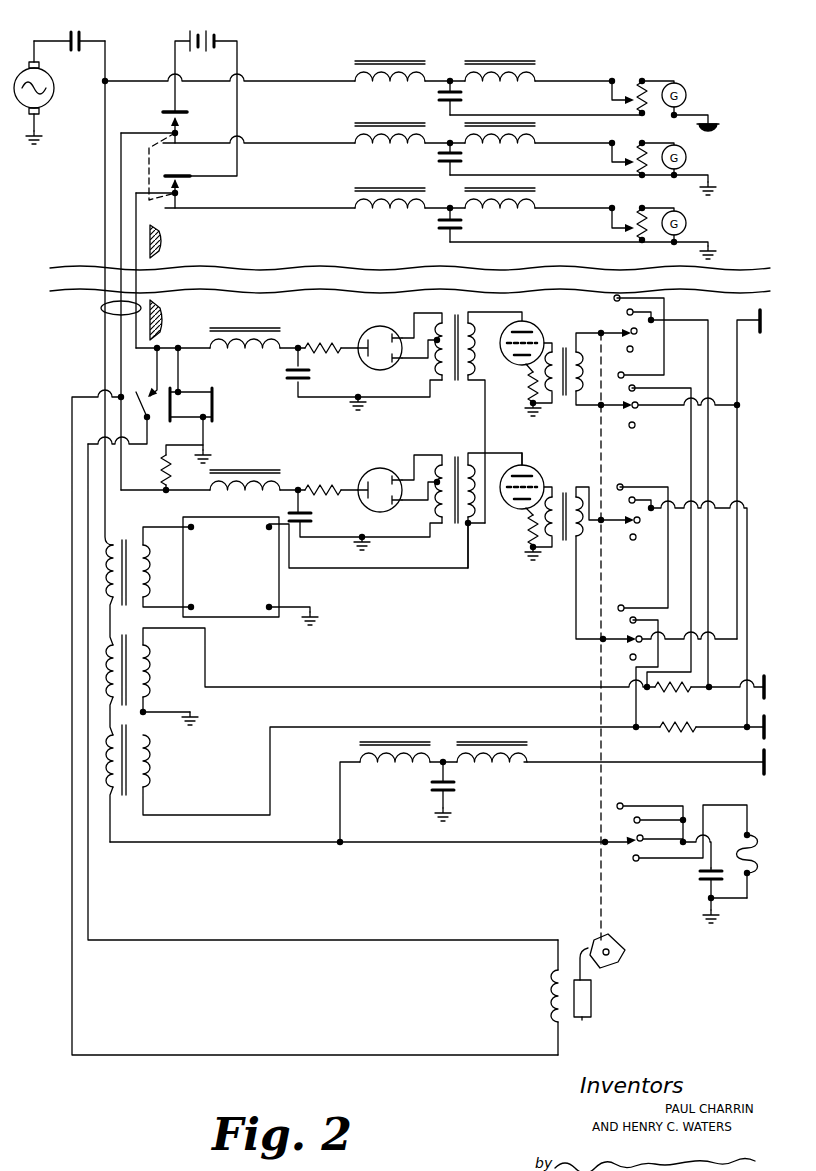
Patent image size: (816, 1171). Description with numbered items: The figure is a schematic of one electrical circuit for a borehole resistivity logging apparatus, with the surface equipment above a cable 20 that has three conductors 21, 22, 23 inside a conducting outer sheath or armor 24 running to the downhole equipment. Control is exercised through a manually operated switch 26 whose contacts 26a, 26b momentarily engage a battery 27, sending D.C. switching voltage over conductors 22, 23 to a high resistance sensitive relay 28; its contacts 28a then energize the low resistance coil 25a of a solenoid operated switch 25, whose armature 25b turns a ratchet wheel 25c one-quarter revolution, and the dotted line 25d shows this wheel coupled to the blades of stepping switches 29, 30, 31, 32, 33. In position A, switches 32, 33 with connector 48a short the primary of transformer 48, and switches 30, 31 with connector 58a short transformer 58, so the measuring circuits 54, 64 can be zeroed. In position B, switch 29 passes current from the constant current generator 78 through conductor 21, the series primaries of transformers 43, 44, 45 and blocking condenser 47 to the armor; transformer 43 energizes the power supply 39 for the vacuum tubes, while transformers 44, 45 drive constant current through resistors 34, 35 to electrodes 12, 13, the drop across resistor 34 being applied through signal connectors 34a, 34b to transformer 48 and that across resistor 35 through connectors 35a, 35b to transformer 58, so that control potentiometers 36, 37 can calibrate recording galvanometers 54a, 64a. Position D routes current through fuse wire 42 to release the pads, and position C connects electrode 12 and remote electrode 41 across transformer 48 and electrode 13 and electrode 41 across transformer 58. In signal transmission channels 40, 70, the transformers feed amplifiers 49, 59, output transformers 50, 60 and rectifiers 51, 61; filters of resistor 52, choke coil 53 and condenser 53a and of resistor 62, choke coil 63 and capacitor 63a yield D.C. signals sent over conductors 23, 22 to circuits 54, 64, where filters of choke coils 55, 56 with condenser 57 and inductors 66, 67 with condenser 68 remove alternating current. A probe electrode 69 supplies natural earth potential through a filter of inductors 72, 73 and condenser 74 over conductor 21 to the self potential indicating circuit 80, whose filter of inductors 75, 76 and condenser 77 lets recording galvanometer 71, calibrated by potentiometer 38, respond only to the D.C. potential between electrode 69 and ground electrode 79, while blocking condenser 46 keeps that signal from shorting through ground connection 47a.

The electrode 12 is at (766, 683).
The electrode 13 is at (766, 722).
The cable 20 is at (101, 309).
The cable conductor 21 is at (104, 210).
The cable conductor 22 is at (120, 222).
The cable conductor 23 is at (135, 240).
The outer sheath or armor 24 is at (163, 323).
The solenoid operated switch 25 is at (600, 993).
The solenoid coil 25a is at (551, 995).
The armature 25b is at (588, 1018).
The ratchet wheel 25c is at (626, 945).
The dotted line 25d is at (600, 893).
The manually operated switch 26 is at (159, 126).
The switch contact 26a is at (178, 131).
The switch contact 26b is at (178, 192).
The battery 27 is at (216, 38).
The sensitive relay 28 is at (191, 405).
The relay contacts 28a is at (143, 389).
The switch 29 is at (606, 838).
The switch 30 is at (600, 642).
The switch 31 is at (600, 522).
The switch 32 is at (599, 408).
The switch 33 is at (600, 330).
The resistor 34 is at (674, 687).
The signal connector 34a is at (681, 387).
The signal connector 34b is at (710, 354).
The resistor 35 is at (680, 730).
The signal connector 35a is at (660, 633).
The signal connector 35b is at (748, 586).
The control potentiometer 36 is at (650, 218).
The control potentiometer 37 is at (650, 151).
The potentiometer 38 is at (650, 84).
The power supply 39 is at (281, 590).
The signal transmission channel 40 is at (347, 316).
The remote electrode 41 is at (768, 314).
The fuse wire 42 is at (752, 858).
The transformer 43 is at (100, 569).
The transformer 44 is at (100, 670).
The transformer 45 is at (100, 748).
The blocking condenser 46 is at (90, 37).
The blocking condenser 47 is at (700, 883).
The ground connection 47a is at (720, 920).
The transformer 48 is at (558, 348).
The connector 48a is at (666, 354).
The amplifier 49 is at (547, 317).
The output transformer 50 is at (456, 318).
The rectifier 51 is at (386, 318).
The resistor 52 is at (336, 334).
The choke coil 53 is at (259, 324).
The condenser 53a is at (308, 370).
The resistivity measuring circuit 54 is at (730, 213).
The recording galvanometer 54a is at (686, 223).
The choke coil 55 is at (392, 185).
The choke coil 56 is at (540, 186).
The condenser 57 is at (444, 226).
The transformer 58 is at (568, 493).
The connector 58a is at (666, 552).
The amplifier 59 is at (547, 460).
The output transformer 60 is at (458, 456).
The rectifier 61 is at (394, 458).
The resistor 62 is at (339, 482).
The choke coil 63 is at (260, 468).
The capacitor 63a is at (312, 506).
The resistivity measuring circuit 64 is at (728, 152).
The recording galvanometer 64a is at (686, 157).
The inductor 66 is at (396, 120).
The inductor 67 is at (540, 122).
The condenser 68 is at (439, 157).
The probe electrode 69 is at (766, 762).
The signal transmission channel 70 is at (347, 451).
The recording galvanometer 71 is at (686, 95).
The inductor 72 is at (384, 770).
The inductor 73 is at (476, 768).
The condenser 74 is at (430, 790).
The inductor 75 is at (406, 56).
The inductor 76 is at (513, 58).
The condenser 77 is at (439, 98).
The constant current generator 78 is at (54, 90).
The ground electrode 79 is at (722, 129).
The self potential indicating circuit 80 is at (708, 76).